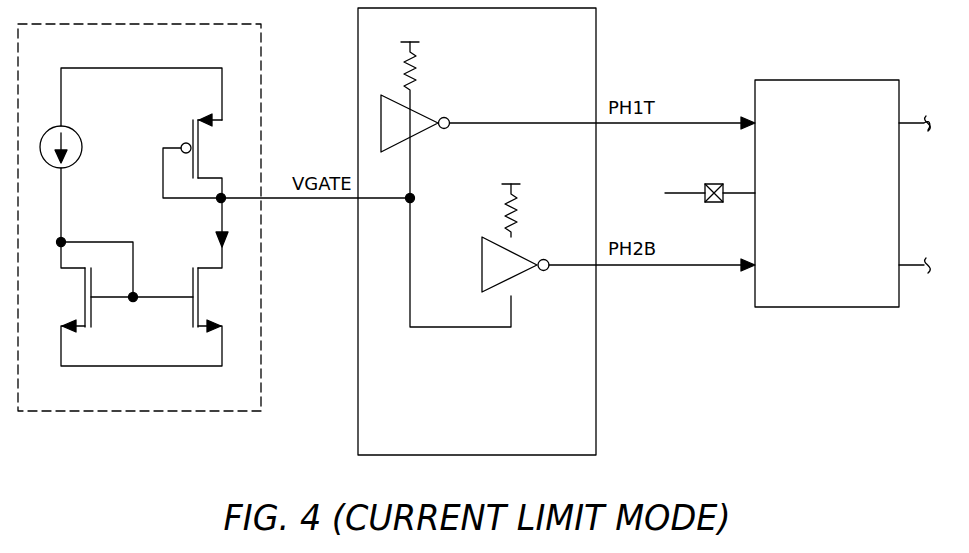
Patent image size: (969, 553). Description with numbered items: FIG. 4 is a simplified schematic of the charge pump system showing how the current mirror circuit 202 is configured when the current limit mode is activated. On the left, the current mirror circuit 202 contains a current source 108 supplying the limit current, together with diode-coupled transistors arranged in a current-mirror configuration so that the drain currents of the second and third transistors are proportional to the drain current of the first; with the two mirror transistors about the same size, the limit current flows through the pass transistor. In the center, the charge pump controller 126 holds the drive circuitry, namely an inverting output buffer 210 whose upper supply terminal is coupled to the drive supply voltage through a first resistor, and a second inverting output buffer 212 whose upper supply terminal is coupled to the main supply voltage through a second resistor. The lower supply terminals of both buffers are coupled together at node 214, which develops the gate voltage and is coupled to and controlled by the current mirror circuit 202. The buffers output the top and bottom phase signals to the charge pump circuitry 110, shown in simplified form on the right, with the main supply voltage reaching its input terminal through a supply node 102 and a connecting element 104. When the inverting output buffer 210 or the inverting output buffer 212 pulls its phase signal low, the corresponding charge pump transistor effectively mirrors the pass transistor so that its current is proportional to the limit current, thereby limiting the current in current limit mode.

The supply voltage input node (VDD) 102 is at (680, 192).
The input switch / connection element 104 is at (713, 202).
The current source (ILIM) 108 is at (77, 126).
The charge pump circuitry 110 is at (811, 233).
The charge pump controller 126 is at (597, 78).
The current mirror circuit 202 is at (139, 217).
The inverting output buffer 210 is at (420, 134).
The inverting output buffer 212 is at (529, 278).
The node 214 is at (413, 200).